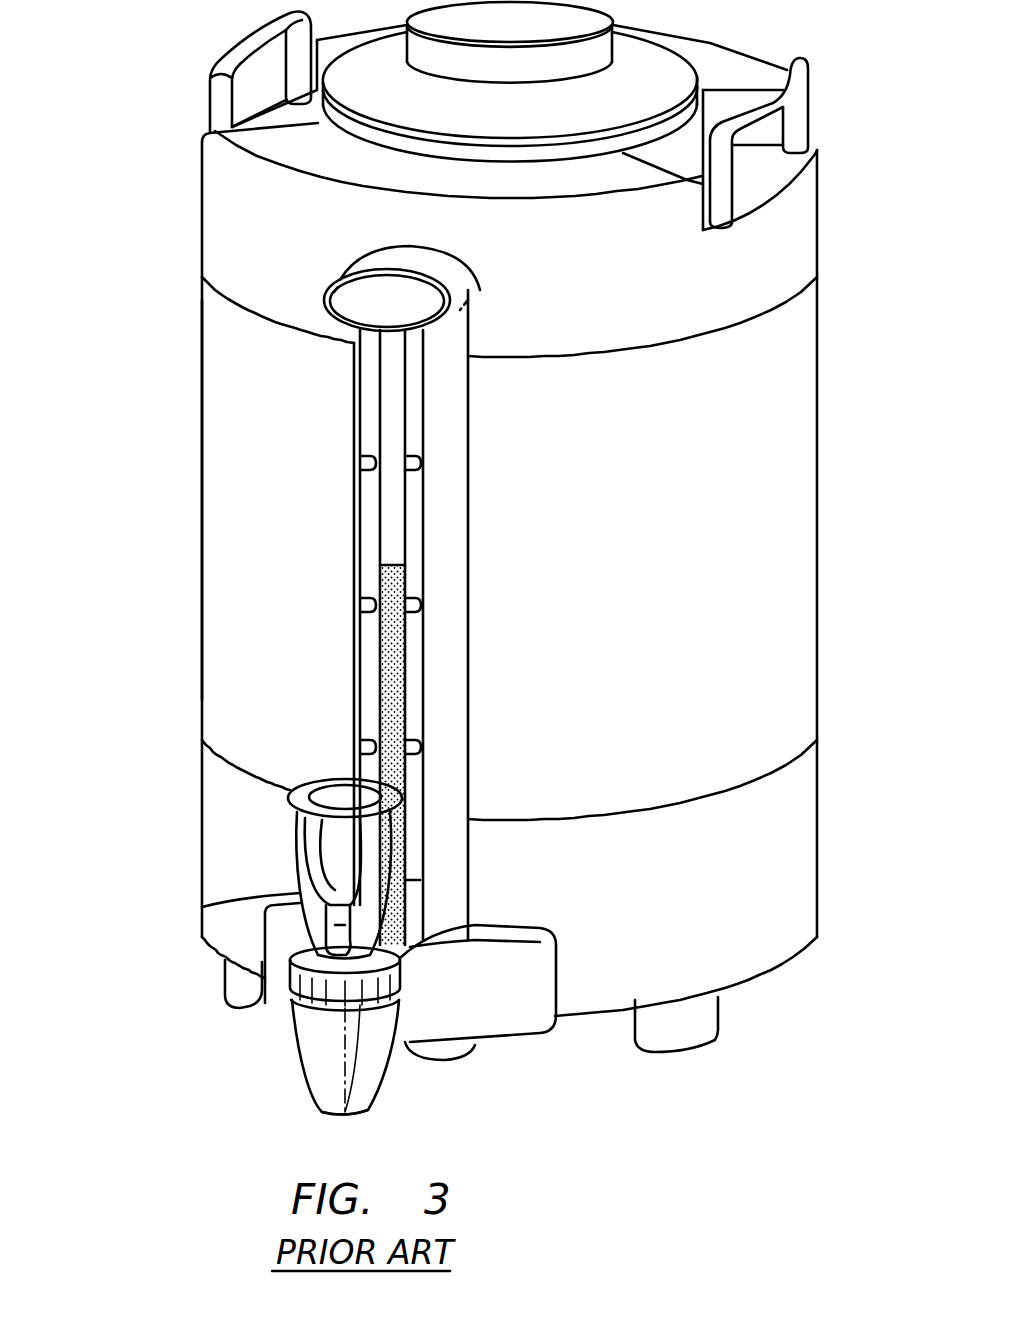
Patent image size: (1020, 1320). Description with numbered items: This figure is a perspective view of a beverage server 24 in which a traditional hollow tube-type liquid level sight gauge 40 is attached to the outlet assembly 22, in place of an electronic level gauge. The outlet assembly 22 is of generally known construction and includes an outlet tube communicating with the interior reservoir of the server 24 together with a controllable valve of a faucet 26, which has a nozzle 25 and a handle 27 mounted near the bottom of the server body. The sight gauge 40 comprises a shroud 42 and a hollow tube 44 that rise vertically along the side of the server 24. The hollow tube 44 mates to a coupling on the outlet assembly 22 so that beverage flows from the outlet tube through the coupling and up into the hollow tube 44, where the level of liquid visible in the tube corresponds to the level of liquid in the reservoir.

The outlet assembly 22 is at (490, 1058).
The beverage server 24 is at (204, 835).
The nozzle 25 is at (315, 1030).
The faucet 26 is at (312, 1085).
The handle 27 is at (318, 889).
The liquid level sight gauge 40 is at (327, 586).
The shroud 42 is at (445, 556).
The hollow tube 44 is at (403, 667).